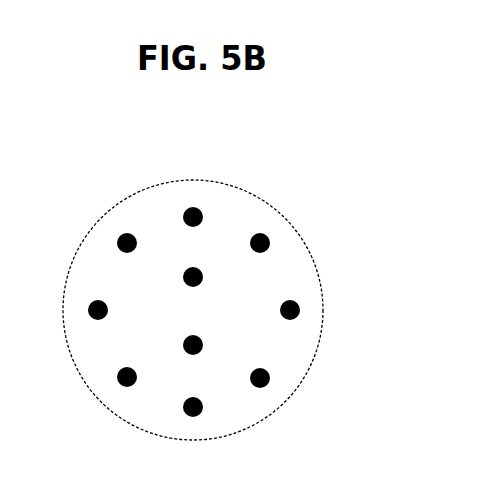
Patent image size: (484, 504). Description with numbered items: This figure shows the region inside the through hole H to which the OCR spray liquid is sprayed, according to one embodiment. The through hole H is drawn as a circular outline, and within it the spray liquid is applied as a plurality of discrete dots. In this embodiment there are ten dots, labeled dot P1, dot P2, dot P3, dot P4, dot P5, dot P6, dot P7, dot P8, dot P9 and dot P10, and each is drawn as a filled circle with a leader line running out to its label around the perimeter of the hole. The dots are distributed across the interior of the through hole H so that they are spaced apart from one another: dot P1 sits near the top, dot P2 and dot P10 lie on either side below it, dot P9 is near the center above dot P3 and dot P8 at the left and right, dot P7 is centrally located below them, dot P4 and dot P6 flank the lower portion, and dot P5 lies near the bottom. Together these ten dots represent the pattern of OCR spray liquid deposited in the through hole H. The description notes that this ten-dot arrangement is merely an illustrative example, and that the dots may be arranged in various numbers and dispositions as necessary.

The through hole H is at (248, 428).
The dot P1 is at (203, 217).
The dot P2 is at (117, 243).
The dot P3 is at (88, 310).
The dot P4 is at (117, 377).
The dot P5 is at (183, 409).
The dot P6 is at (270, 378).
The dot P7 is at (203, 345).
The dot P8 is at (300, 310).
The dot P9 is at (203, 277).
The dot P10 is at (270, 243).